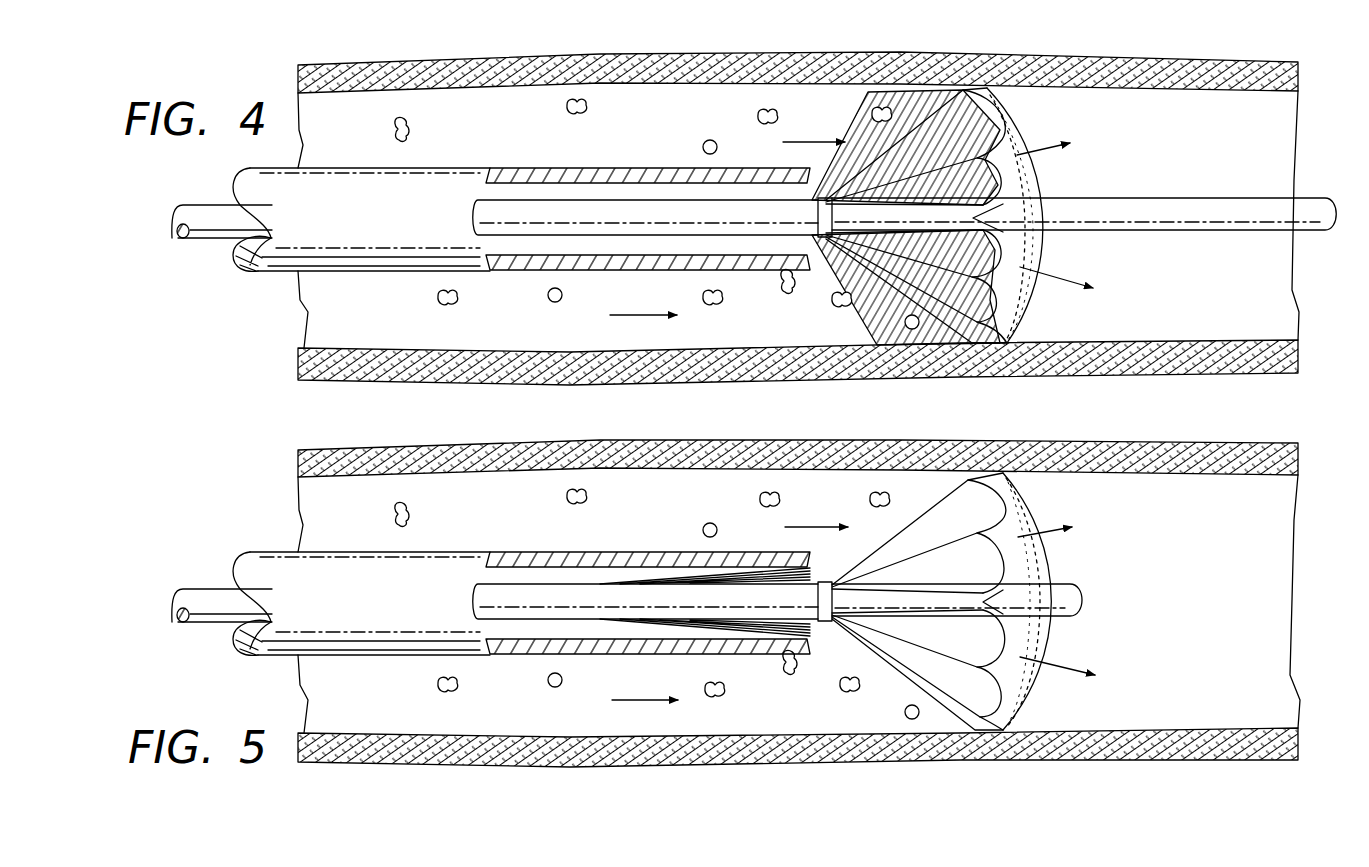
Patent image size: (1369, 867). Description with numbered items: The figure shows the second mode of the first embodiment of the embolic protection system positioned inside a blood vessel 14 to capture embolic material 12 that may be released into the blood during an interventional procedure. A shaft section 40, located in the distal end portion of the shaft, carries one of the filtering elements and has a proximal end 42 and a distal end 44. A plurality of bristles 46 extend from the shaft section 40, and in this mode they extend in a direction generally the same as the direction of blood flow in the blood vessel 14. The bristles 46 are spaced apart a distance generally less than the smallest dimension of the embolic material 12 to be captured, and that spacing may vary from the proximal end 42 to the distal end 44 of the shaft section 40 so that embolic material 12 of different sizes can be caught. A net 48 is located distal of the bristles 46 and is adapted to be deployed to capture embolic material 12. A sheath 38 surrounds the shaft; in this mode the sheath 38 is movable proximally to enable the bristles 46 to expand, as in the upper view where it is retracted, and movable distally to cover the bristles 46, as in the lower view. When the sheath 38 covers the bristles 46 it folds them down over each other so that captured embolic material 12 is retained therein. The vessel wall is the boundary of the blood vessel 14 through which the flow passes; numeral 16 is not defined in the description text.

In FIG. 4, the embolic material 12 is at (578, 98).
In FIG. 5, the embolic material 12 is at (577, 494).
In FIG. 4, the blood vessel 14 is at (450, 66).
In FIG. 5, the blood vessel 14 is at (470, 448).
In FIG. 4, the blood vessel 16 is at (1164, 63).
In FIG. 5, the blood vessel 16 is at (1203, 448).
In FIG. 4, the sheath 38 is at (636, 167).
In FIG. 5, the sheath 38 is at (594, 655).
In FIG. 4, the shaft section 40 is at (913, 222).
In FIG. 5, the shaft section 40 is at (660, 600).
In FIG. 4, the proximal end 42 is at (844, 222).
In FIG. 5, the proximal end 42 is at (563, 600).
In FIG. 4, the distal end 44 is at (975, 222).
In FIG. 5, the distal end 44 is at (740, 600).
In FIG. 4, the bristles 46 is at (922, 95).
In FIG. 4, the net 48 is at (1013, 124).
In FIG. 5, the net 48 is at (1020, 511).